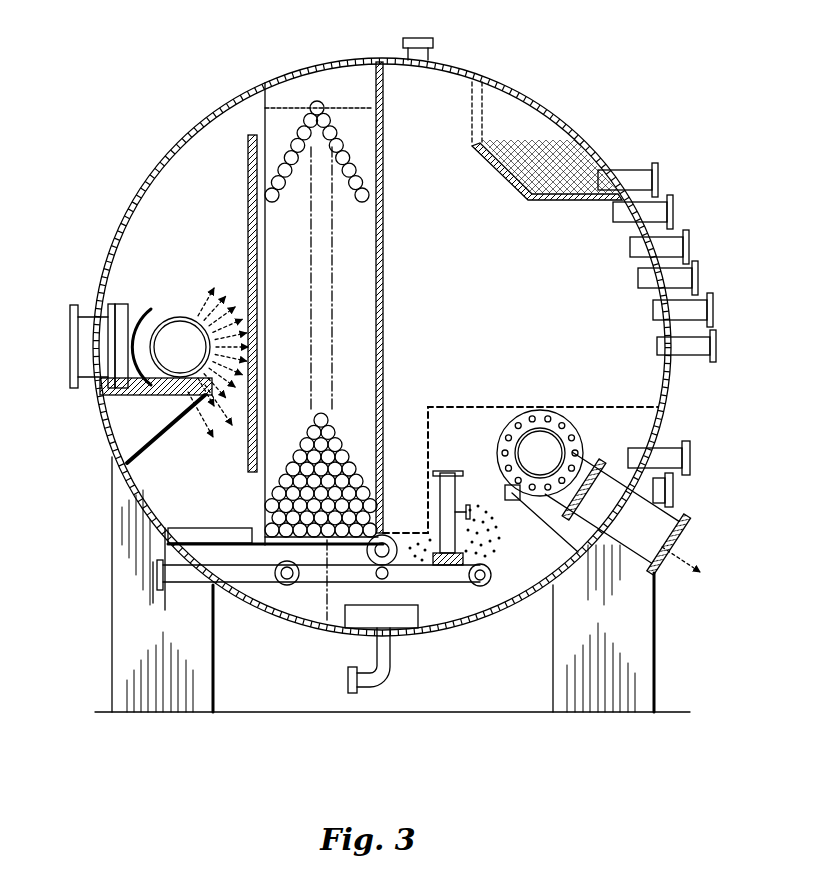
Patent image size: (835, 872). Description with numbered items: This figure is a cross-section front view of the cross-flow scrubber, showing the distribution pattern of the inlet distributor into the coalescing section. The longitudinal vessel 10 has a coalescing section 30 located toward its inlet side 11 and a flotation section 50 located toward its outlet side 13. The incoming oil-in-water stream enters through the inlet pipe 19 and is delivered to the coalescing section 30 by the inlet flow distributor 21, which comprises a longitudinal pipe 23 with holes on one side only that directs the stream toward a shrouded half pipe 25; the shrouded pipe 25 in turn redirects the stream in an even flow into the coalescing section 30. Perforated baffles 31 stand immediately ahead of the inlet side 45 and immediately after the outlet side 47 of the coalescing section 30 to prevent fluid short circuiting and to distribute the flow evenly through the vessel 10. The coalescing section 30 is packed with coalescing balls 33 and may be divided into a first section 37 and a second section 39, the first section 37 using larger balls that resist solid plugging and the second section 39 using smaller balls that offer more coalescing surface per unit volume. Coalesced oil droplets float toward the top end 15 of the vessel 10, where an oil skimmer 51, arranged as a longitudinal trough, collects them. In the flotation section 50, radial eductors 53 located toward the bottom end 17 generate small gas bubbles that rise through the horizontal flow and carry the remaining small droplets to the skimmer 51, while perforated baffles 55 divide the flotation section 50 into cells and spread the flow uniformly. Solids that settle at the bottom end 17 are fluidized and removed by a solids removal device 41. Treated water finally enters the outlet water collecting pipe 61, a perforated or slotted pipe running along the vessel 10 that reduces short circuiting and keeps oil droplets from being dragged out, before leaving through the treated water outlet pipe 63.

The longitudinal vessel 10 is at (183, 132).
The inlet side 11 is at (92, 392).
The outlet side 13 is at (670, 392).
The top end 15 is at (458, 70).
The bottom end 17 is at (311, 630).
The inlet pipe 19 is at (76, 303).
The inlet flow distributor 21 is at (158, 290).
The longitudinal pipe 23 is at (187, 314).
The shrouded pipe 25 is at (150, 380).
The coalescing section 30 is at (290, 100).
The perforated baffles 31 is at (248, 222).
The coalescing balls 33 is at (345, 447).
The first section 37 is at (248, 450).
The second section 39 is at (356, 358).
The solids removal device 41 is at (418, 616).
The inlet side of the coalescing section 45 is at (262, 270).
The outlet side of the coalescing section 47 is at (385, 258).
The flotation section 50 is at (505, 556).
The oil skimmer 51 is at (492, 162).
The radial eductors 53 is at (452, 472).
The perforated baffles 55 is at (545, 407).
The outlet water collecting pipe 61 is at (576, 432).
The treated water outlet pipe 63 is at (660, 566).